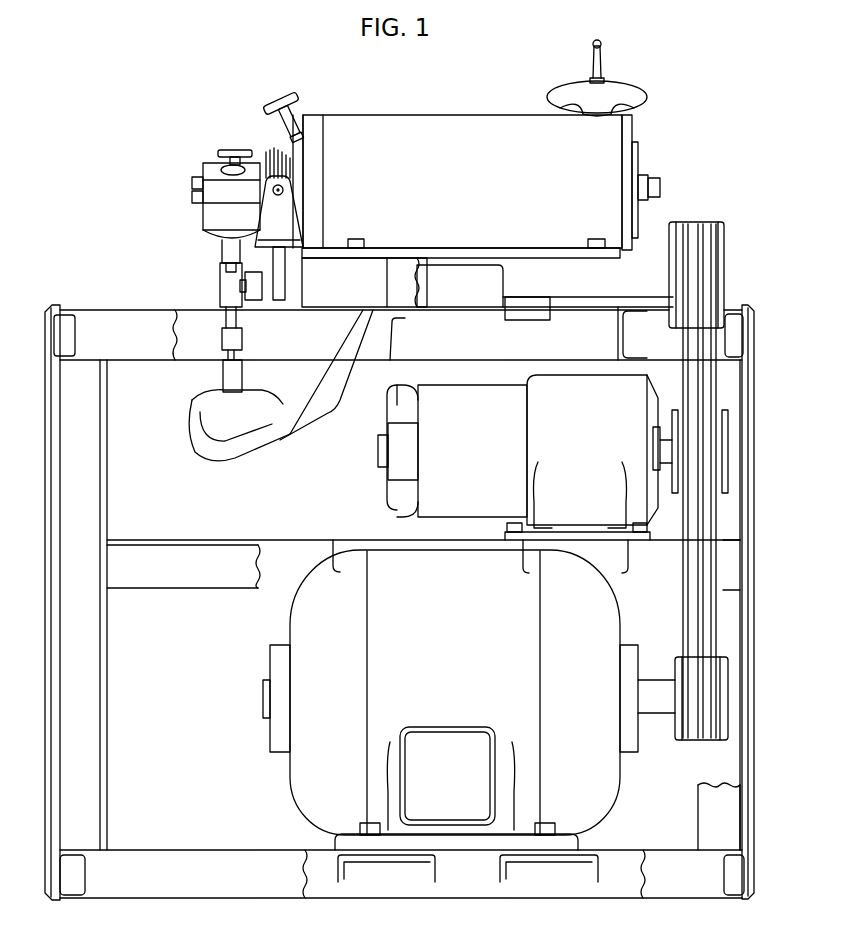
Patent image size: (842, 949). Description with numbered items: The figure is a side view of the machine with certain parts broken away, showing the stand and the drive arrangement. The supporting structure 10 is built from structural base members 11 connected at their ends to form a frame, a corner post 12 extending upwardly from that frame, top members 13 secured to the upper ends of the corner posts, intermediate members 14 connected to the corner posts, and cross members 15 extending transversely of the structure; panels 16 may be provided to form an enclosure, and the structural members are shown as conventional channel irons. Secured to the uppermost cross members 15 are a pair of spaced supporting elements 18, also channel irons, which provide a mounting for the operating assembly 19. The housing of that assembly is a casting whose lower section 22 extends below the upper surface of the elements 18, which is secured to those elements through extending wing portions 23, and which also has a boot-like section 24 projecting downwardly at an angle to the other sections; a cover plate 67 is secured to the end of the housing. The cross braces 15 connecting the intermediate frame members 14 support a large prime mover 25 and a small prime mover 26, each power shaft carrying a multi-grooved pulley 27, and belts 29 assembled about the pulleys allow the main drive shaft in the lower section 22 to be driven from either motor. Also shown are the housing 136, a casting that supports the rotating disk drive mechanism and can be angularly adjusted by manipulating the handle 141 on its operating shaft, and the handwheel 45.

The supporting structure 10 is at (88, 310).
The structural base members 11 is at (204, 884).
The corner post 12 is at (100, 771).
The top members 13 is at (66, 338).
The intermediate members 14 is at (423, 564).
The cross members 15 is at (392, 361).
The panels 16 is at (48, 640).
The supporting elements 18 is at (392, 273).
The operating assembly 19 is at (447, 110).
The lower section 22 is at (545, 292).
The wing portions 23 is at (508, 248).
The boot-like section 24 is at (195, 427).
The large prime mover 25 is at (469, 695).
The small prime mover 26 is at (525, 453).
The multi-grooved pulley 27 is at (725, 262).
The belts 29 is at (725, 621).
The handwheel 45 is at (612, 93).
The cover plate 67 is at (307, 124).
The housing 136 is at (205, 226).
The handle 141 is at (230, 150).